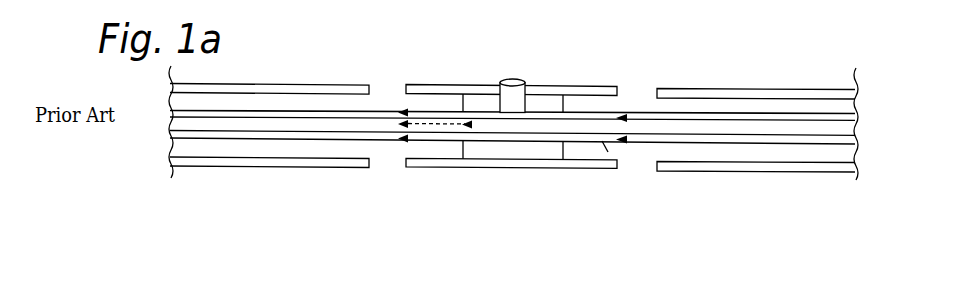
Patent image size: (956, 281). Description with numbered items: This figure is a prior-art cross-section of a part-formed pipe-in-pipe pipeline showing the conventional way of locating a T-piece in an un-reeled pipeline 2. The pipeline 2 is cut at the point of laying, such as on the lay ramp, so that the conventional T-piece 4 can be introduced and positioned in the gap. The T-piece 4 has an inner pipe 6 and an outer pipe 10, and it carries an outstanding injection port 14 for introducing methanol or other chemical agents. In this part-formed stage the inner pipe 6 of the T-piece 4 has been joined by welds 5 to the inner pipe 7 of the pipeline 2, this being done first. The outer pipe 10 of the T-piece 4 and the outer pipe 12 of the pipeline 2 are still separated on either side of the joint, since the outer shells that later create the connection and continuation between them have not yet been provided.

The pipeline 2 is at (254, 168).
The T-piece 4 is at (450, 169).
The welds 5 is at (403, 141).
The inner pipe 6 is at (602, 141).
The inner pipe 7 is at (741, 114).
The outer pipe 10 is at (592, 85).
The outer pipe 12 is at (325, 84).
The injection port 14 is at (513, 79).